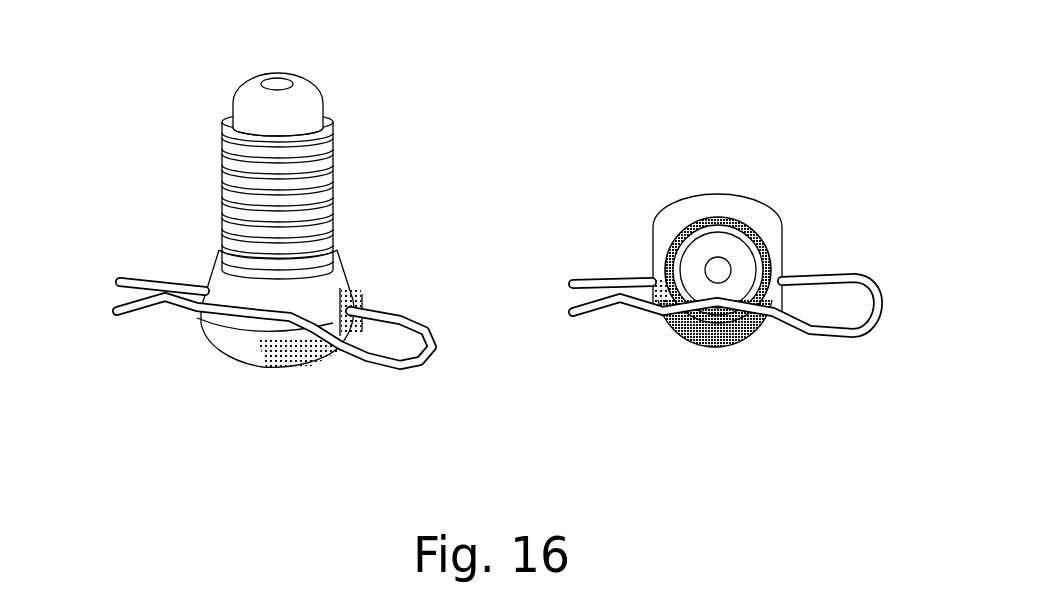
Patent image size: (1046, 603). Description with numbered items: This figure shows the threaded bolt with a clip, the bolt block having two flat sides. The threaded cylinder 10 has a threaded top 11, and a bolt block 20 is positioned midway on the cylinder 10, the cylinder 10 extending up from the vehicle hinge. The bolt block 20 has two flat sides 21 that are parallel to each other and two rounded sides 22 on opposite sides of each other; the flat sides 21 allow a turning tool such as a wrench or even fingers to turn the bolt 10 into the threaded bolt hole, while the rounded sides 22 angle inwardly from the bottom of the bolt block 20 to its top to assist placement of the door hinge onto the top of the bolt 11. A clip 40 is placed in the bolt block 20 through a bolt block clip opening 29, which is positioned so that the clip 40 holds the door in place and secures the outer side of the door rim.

The threaded cylinder 10 is at (245, 92).
The threaded top 11 is at (334, 182).
The bolt block 20 is at (218, 272).
The flat sides 21 is at (364, 302).
The rounded sides 22 is at (728, 202).
The bolt block clip opening 29 is at (350, 297).
The clip 40 is at (427, 367).